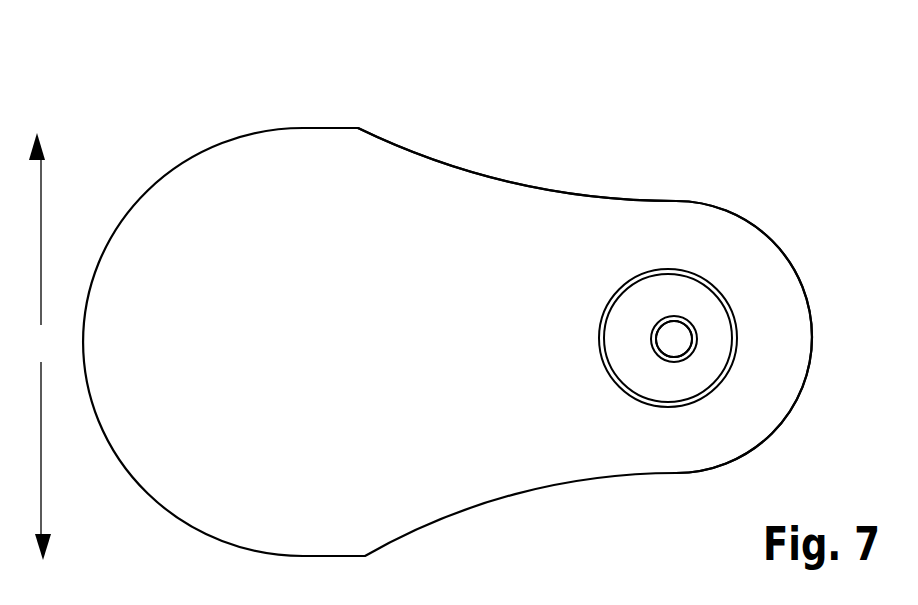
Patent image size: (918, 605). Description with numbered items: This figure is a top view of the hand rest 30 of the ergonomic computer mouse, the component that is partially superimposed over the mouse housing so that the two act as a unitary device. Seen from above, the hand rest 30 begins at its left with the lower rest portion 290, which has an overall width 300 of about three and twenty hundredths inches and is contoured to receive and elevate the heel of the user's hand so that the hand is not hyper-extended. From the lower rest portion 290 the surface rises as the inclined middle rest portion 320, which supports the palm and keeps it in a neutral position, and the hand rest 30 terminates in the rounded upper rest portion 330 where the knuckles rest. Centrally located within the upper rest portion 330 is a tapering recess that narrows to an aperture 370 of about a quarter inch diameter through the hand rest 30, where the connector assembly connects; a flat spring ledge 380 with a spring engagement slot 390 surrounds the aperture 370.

The hand rest 30 is at (633, 121).
The lower rest portion 290 is at (200, 315).
The overall width 300 is at (40, 346).
The middle rest portion 320 is at (497, 288).
The upper rest portion 330 is at (747, 278).
The aperture 370 is at (681, 339).
The flat spring ledge 380 is at (690, 357).
The spring engagement slot 390 is at (675, 318).